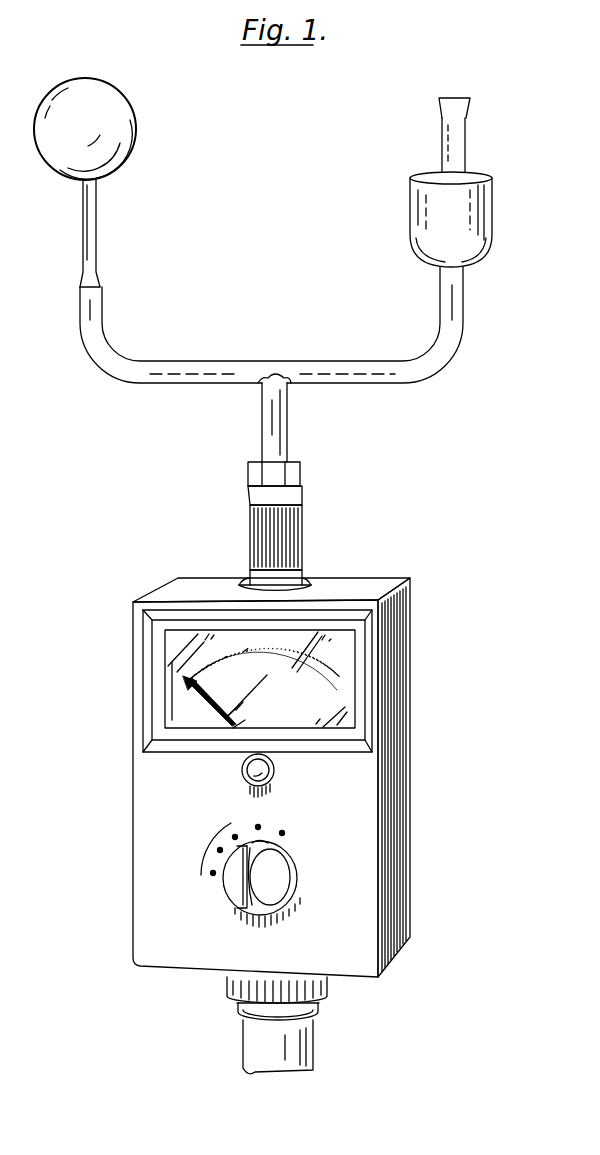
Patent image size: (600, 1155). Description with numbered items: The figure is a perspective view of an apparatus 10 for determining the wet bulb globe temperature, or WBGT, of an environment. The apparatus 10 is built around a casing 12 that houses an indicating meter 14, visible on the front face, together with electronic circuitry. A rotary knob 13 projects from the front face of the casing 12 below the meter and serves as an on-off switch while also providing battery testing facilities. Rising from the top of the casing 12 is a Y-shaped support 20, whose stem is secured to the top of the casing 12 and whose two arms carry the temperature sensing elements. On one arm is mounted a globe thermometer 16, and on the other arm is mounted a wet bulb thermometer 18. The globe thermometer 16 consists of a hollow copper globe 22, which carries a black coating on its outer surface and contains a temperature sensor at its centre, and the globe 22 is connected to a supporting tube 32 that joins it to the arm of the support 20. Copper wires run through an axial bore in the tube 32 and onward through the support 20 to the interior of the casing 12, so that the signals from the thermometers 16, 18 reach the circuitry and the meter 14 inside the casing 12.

The apparatus 10 is at (308, 768).
The casing 12 is at (402, 662).
The rotary knob 13 is at (283, 873).
The indicating meter 14 is at (335, 692).
The globe thermometer 16 is at (134, 105).
The wet bulb thermometer 18 is at (494, 212).
The Y-shaped support 20 is at (291, 400).
The hollow copper globe 22 is at (128, 153).
The supporting tube 32 is at (92, 238).